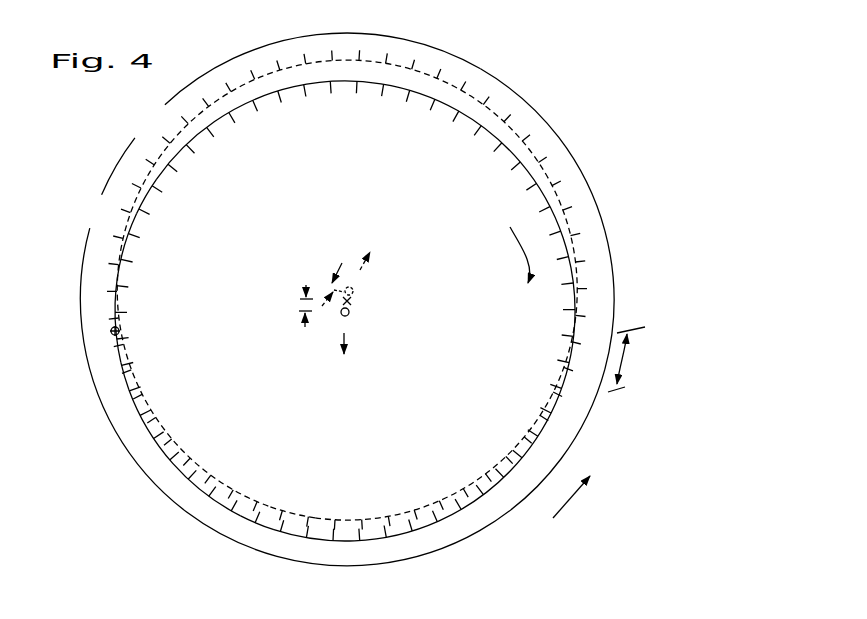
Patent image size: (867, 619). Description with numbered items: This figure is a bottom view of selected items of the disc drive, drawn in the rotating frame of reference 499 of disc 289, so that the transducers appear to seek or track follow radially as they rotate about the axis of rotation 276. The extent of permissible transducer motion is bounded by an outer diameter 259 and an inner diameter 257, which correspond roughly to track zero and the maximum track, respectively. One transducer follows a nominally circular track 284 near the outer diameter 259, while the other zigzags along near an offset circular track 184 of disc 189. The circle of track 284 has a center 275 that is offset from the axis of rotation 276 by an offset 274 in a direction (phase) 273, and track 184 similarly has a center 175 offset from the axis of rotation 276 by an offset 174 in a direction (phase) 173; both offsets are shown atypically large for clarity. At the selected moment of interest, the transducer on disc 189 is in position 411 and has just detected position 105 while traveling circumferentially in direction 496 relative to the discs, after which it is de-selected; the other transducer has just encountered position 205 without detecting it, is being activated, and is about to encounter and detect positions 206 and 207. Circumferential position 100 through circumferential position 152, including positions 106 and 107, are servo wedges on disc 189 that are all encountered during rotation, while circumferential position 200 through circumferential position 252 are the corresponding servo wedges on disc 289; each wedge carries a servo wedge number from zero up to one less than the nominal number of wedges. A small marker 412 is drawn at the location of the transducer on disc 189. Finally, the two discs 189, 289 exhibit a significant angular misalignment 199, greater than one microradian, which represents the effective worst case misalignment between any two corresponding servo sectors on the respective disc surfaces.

The circumferential position 100 is at (127, 198).
The position 105 is at (128, 312).
The circumferential position 106 is at (137, 349).
The circumferential position 107 is at (146, 380).
The circumferential position 152 is at (146, 158).
The direction (phase) 173 is at (387, 253).
The offset 174 is at (326, 275).
The center 175 is at (363, 291).
The offset circular track 184 is at (293, 514).
The disc 189 is at (607, 106).
The angular misalignment 199 is at (638, 359).
The circumferential position 200 is at (151, 199).
The position 205 is at (110, 318).
The position 206 is at (113, 350).
The position 207 is at (121, 380).
The circumferential position 252 is at (174, 168).
The inner diameter 257 is at (529, 282).
The outer diameter 259 is at (611, 270).
The direction (phase) 273 is at (324, 353).
The offset 274 is at (290, 312).
The center 275 is at (357, 316).
The axis of rotation 276 is at (359, 303).
The nominally circular track 284 is at (258, 523).
The disc 289 is at (390, 299).
The position 411 is at (128, 332).
The reference mark 412 is at (111, 331).
The direction 496 is at (584, 497).
The rotating frame of reference 499 is at (342, 397).